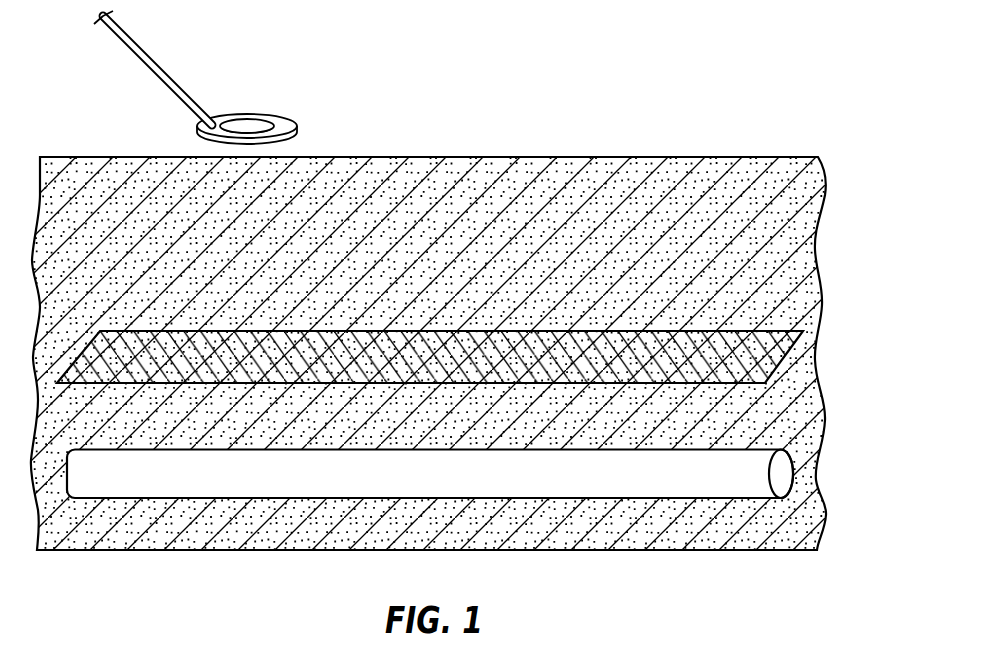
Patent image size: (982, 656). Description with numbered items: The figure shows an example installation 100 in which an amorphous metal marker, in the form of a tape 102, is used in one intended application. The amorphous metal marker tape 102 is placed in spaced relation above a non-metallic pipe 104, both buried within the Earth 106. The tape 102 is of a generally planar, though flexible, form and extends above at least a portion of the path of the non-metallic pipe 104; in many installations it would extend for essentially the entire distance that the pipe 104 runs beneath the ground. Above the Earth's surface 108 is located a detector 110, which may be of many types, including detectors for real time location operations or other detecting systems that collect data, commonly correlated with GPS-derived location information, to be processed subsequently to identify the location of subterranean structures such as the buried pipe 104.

The installation 100 is at (698, 114).
The amorphous metal marker tape 102 is at (750, 357).
The non-metallic pipe 104 is at (753, 475).
The Earth 106 is at (773, 238).
The Earth's surface 108 is at (500, 157).
The detector 110 is at (288, 125).